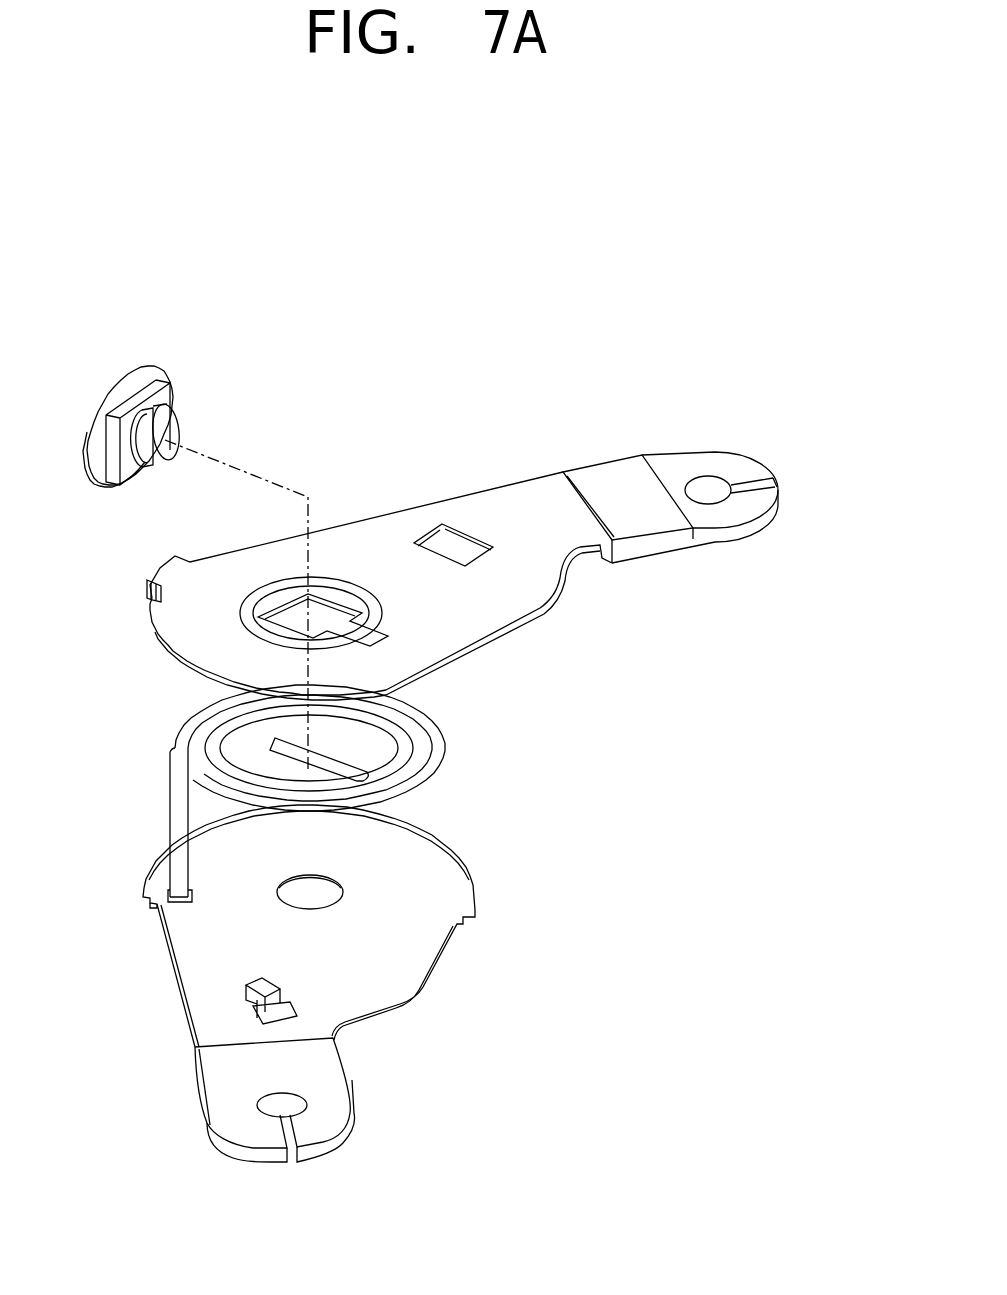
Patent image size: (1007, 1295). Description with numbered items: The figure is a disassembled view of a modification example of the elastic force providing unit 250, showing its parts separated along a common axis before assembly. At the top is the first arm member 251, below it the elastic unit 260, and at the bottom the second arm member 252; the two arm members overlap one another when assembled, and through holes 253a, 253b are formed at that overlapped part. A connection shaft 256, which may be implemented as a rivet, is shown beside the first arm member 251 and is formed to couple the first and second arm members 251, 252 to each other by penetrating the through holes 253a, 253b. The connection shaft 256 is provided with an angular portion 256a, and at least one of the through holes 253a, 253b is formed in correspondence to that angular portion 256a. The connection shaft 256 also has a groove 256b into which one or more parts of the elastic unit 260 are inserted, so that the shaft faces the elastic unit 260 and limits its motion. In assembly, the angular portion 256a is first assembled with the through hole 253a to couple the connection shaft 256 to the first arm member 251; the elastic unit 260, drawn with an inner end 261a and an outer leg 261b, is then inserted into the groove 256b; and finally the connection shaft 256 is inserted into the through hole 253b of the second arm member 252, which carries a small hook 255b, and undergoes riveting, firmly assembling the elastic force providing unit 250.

The elastic force providing unit 250 is at (737, 411).
The first arm member 251 is at (527, 503).
The second arm member 252 is at (320, 1078).
The through hole 253a is at (329, 621).
The through hole 253b is at (318, 893).
The hook 255b is at (245, 997).
The connection shaft 256 is at (128, 385).
The angular portion 256a is at (150, 377).
The groove 256b is at (176, 427).
The elastic unit 260 is at (458, 741).
The inner spring end 261a is at (270, 741).
The outer spring end 261b is at (183, 868).